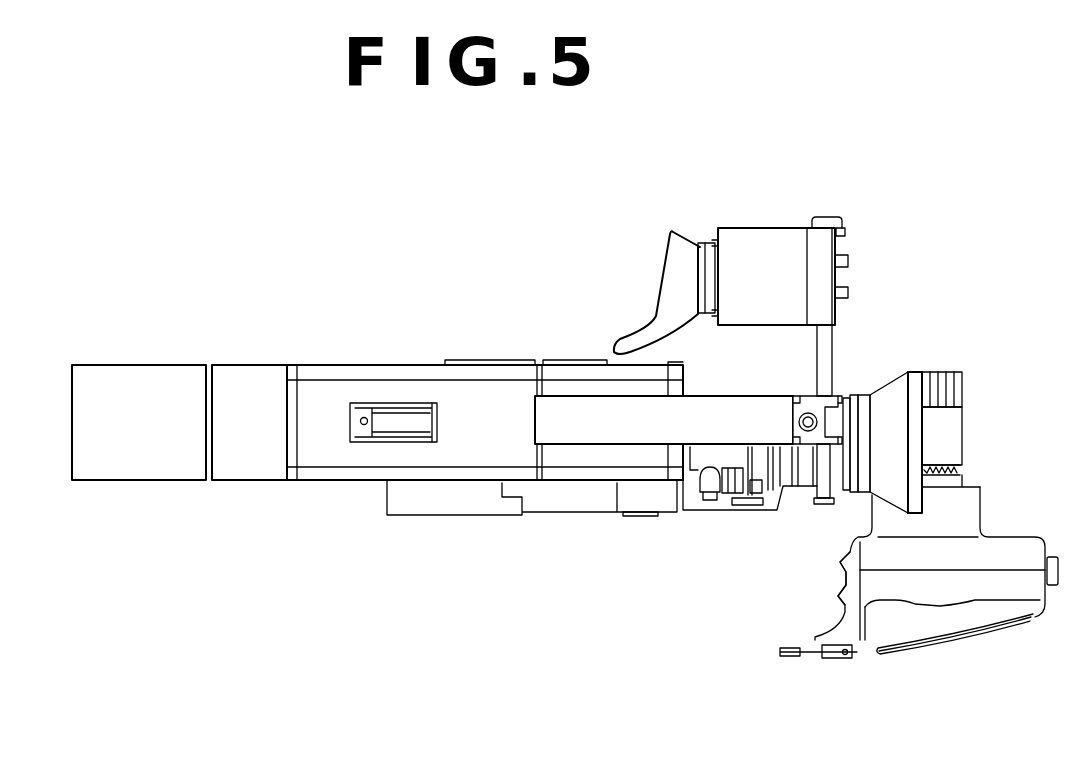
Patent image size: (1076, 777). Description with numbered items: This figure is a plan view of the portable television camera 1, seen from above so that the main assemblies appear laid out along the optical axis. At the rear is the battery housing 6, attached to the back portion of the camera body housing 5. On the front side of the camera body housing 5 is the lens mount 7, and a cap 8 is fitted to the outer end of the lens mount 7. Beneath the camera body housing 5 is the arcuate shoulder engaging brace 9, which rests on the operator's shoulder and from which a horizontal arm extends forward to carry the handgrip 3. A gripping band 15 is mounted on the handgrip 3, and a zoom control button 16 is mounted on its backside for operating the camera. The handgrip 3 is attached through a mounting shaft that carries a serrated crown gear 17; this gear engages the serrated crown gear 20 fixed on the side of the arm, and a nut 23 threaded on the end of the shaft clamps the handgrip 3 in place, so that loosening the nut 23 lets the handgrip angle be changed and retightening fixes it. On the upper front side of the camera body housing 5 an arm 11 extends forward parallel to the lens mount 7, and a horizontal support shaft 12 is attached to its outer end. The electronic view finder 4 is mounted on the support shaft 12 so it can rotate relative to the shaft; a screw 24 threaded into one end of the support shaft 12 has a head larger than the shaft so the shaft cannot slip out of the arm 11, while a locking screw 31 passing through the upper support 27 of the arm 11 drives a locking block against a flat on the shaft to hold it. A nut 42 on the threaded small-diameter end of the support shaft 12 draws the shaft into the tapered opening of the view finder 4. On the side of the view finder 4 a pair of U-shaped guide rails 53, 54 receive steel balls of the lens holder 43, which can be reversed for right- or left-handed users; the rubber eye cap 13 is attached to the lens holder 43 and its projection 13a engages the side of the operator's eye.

The portable television camera 1 is at (262, 362).
The handgrip 3 is at (1027, 545).
The electronic view finder 4 is at (766, 235).
The camera body housing 5 is at (355, 365).
The battery housing 6 is at (148, 463).
The lens mount 7 is at (797, 488).
The cap 8 is at (913, 375).
The arcuate shoulder engaging brace 9 is at (432, 505).
The arm 11 is at (729, 405).
The horizontal support shaft 12 is at (825, 333).
The eye cap 13 is at (678, 263).
The projection 13a is at (634, 331).
The gripping band 15 is at (1040, 617).
The zoom control button 16 is at (838, 595).
The crown gear 17 is at (950, 482).
The crown gear 20 is at (958, 470).
The nut 23 is at (935, 380).
The screw 24 is at (826, 506).
The upper support 27 is at (820, 400).
The locking screw 31 is at (805, 412).
The nut 42 is at (846, 232).
The lens holder 43 is at (705, 250).
The guide rail 53 is at (712, 316).
The guide rail 54 is at (713, 242).